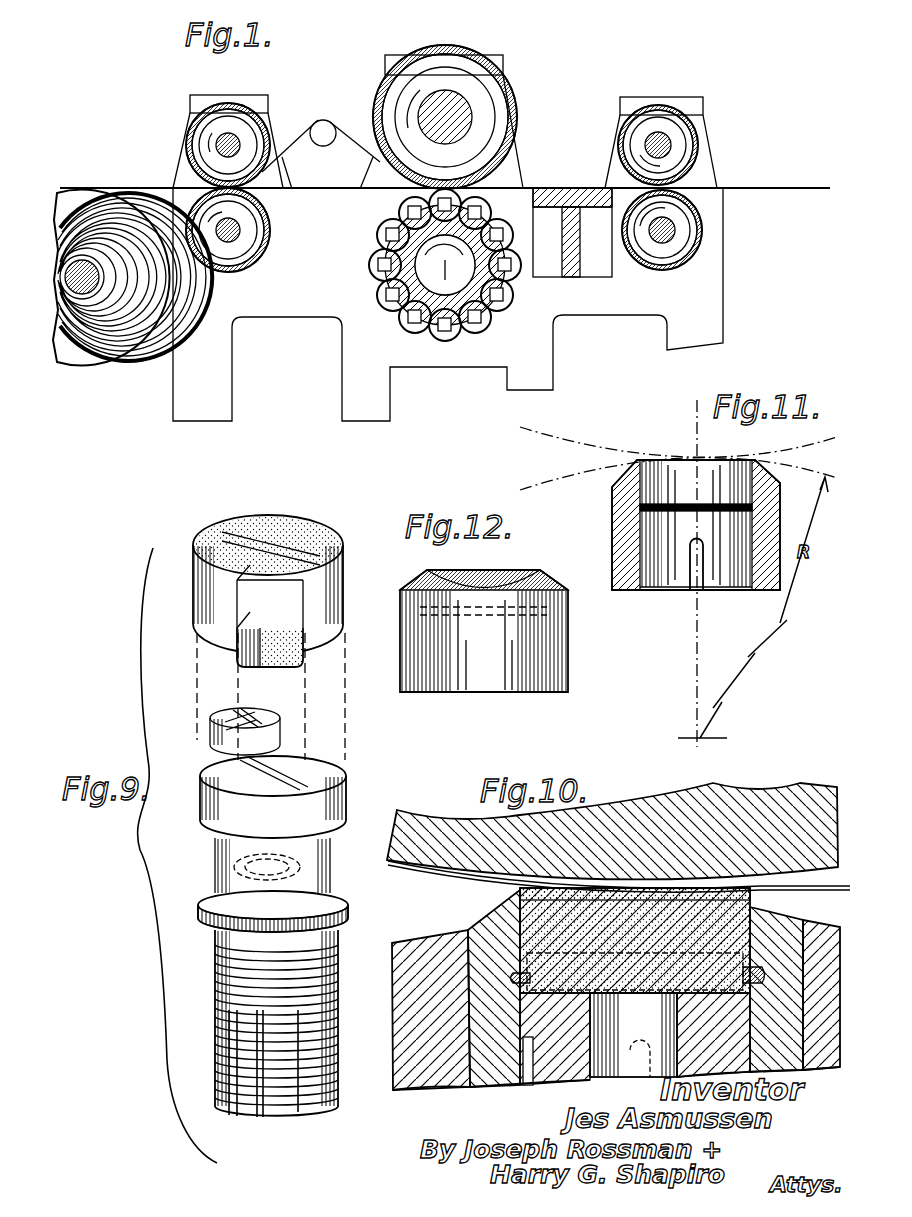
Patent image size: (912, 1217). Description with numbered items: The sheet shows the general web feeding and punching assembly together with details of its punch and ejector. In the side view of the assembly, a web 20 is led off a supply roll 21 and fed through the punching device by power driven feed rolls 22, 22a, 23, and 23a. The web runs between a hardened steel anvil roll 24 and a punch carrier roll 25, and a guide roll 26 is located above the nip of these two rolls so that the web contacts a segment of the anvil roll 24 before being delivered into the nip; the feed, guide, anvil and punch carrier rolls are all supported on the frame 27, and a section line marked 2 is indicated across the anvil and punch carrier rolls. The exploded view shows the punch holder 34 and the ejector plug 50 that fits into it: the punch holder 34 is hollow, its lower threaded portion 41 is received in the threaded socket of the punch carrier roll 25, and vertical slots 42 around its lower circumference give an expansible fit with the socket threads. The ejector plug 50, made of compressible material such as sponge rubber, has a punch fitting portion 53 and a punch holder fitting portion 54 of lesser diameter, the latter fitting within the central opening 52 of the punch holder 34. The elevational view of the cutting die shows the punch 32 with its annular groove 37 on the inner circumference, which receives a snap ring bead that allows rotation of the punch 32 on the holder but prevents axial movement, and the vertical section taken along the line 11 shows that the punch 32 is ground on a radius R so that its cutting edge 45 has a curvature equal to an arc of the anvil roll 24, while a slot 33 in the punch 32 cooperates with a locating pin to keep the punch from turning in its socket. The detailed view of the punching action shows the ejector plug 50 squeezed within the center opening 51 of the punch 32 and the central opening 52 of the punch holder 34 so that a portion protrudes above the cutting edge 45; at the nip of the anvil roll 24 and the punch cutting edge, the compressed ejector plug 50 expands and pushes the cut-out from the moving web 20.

In FIG. 1, the section line 2- 2 is at (460, 26).
In FIG. 12, the section line 11— 11 is at (474, 564).
In FIG. 1, the web 20 is at (137, 188).
In FIG. 10, the web 20 is at (388, 866).
In FIG. 1, the supply roll 21 is at (83, 290).
In FIG. 1, the feed roll 22 is at (243, 110).
In FIG. 1, the feed roll 22a is at (222, 272).
In FIG. 1, the feed roll 23 is at (653, 107).
In FIG. 1, the feed roll 23a is at (660, 270).
In FIG. 1, the anvil roll 24 is at (517, 97).
In FIG. 10, the anvil roll 24 is at (418, 823).
In FIG. 1, the punch carrier roll 25 is at (497, 317).
In FIG. 10, the punch carrier roll 25 is at (390, 1010).
In FIG. 1, the guide roll 26 is at (323, 146).
In FIG. 1, the frame 27 is at (708, 263).
In FIG. 11, the punch 32 is at (615, 547).
In FIG. 12, the punch 32 is at (568, 673).
In FIG. 11, the slot 33 is at (697, 587).
In FIG. 9, the punch holder 34 is at (223, 858).
In FIG. 11, the annular groove 37 is at (615, 512).
In FIG. 12, the annular groove 37 is at (547, 610).
In FIG. 9, the threaded portion 41 is at (243, 993).
In FIG. 9, the vertical slots 42 is at (300, 1100).
In FIG. 11, the cutting edge 45 is at (615, 487).
In FIG. 12, the cutting edge 45 is at (457, 572).
In FIG. 9, the ejector plug 50 is at (340, 572).
In FIG. 10, the ejector plug 50 is at (750, 910).
In FIG. 11, the center opening 51 is at (673, 567).
In FIG. 10, the center opening 51 is at (478, 923).
In FIG. 9, the central opening 52 is at (313, 733).
In FIG. 9, the punch fitting portion 53 is at (213, 595).
In FIG. 10, the punch fitting portion 53 is at (520, 893).
In FIG. 9, the punch holder fitting portion 54 is at (267, 663).
In FIG. 10, the punch holder fitting portion 54 is at (627, 1000).